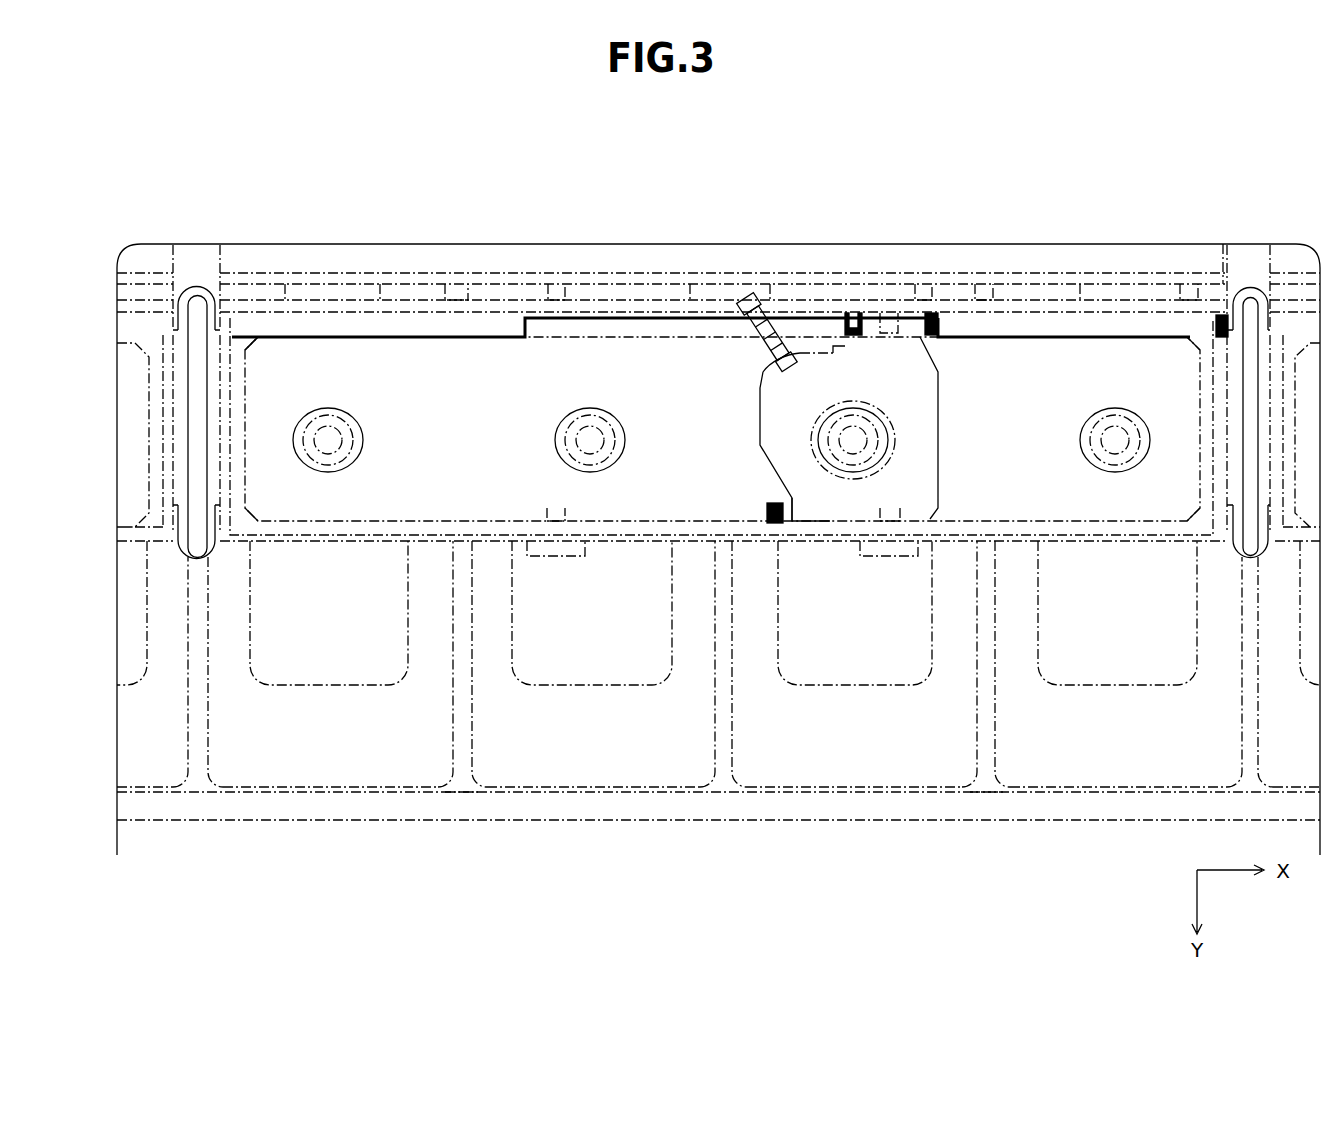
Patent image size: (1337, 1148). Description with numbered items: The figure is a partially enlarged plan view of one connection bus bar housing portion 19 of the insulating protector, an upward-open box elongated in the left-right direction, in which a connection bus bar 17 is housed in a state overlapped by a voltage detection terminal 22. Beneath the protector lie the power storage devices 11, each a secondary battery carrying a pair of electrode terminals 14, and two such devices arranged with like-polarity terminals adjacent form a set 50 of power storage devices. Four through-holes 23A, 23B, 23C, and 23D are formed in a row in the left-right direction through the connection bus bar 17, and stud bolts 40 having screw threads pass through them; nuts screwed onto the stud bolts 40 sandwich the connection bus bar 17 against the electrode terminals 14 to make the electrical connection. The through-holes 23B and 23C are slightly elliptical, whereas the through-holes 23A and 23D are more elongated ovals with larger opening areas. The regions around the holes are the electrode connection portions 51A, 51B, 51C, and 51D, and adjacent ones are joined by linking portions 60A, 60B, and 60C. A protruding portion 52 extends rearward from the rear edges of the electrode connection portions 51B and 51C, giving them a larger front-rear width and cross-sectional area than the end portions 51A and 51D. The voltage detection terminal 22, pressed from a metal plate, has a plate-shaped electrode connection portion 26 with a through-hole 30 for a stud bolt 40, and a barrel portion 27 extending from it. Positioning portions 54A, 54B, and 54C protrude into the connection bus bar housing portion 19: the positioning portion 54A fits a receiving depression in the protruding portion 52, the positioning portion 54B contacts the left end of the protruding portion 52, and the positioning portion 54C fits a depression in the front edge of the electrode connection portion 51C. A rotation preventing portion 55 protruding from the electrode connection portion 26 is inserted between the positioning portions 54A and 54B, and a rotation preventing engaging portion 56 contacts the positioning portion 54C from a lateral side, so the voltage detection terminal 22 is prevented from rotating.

The power storage device 11 is at (400, 765).
The electrode terminal 14 is at (280, 668).
The connection bus bar 17 is at (1177, 377).
The connection bus bar housing portion 19 is at (425, 333).
The voltage detection terminal 22 is at (730, 308).
The through-hole 23A is at (328, 440).
The through-hole 23B is at (590, 440).
The through-hole 23C is at (853, 440).
The through-hole 23D is at (1115, 440).
The electrode connection portion 26 is at (777, 432).
The barrel portion 27 is at (778, 300).
The through-hole 30 is at (833, 468).
The stud bolt 40 is at (305, 415).
The set of power storage devices 50 is at (378, 884).
The electrode connection portion 51A is at (322, 430).
The electrode connection portion 51B is at (614, 415).
The electrode connection portion 51C is at (895, 407).
The electrode connection portion 51D is at (1094, 414).
The protruding portion 52 is at (480, 330).
The positioning portion 54A is at (858, 420).
The positioning portion 54B is at (932, 337).
The positioning portion 54C is at (782, 522).
The rotation preventing portion 55 is at (930, 313).
The rotation preventing engaging portion 56 is at (807, 520).
The linking portion 60A is at (463, 437).
The linking portion 60B is at (702, 438).
The linking portion 60C is at (1038, 437).